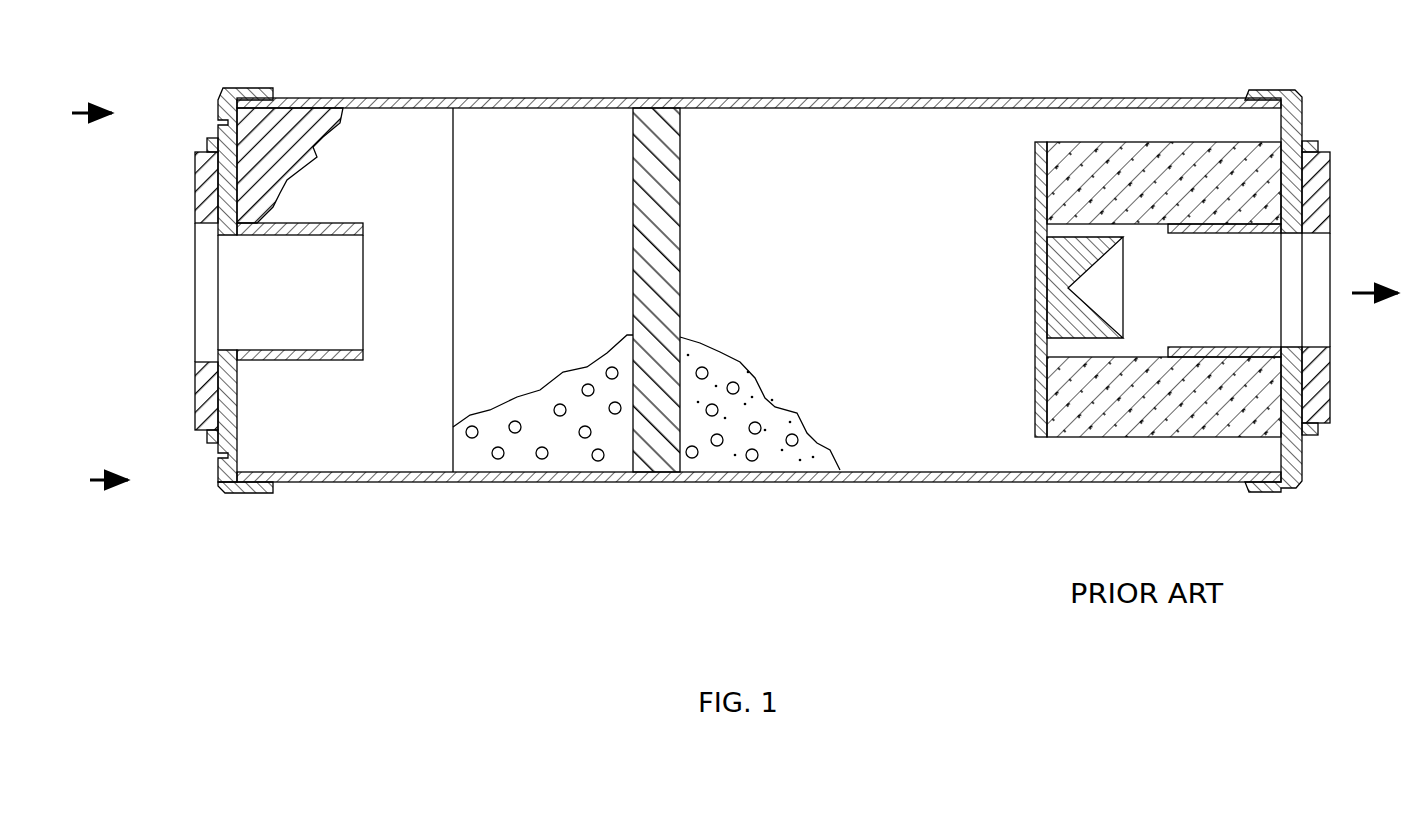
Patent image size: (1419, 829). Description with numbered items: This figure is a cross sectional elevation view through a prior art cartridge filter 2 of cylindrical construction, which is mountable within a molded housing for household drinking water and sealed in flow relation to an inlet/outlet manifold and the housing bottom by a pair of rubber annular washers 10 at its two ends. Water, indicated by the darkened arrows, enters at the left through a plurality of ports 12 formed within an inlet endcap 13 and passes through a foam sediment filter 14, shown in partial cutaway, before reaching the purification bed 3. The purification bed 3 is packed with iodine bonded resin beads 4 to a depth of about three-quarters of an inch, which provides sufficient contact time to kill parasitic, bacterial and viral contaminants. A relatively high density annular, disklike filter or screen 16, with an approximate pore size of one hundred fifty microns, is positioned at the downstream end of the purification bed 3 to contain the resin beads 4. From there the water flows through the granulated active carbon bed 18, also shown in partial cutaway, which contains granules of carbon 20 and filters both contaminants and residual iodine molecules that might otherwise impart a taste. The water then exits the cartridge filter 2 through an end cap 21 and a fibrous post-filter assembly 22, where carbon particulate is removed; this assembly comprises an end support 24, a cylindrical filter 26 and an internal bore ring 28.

The cartridge filter 2 is at (975, 75).
The purification bed 3 is at (530, 330).
The iodine bonded resin beads 4 is at (563, 460).
The rubber annular washers 10 is at (195, 187).
The ports 12 is at (218, 122).
The inlet endcap 13 is at (258, 493).
The foam sediment filter 14 is at (372, 185).
The disklike filter or screen 16 is at (680, 323).
The granulated active carbon bed 18 is at (833, 344).
The granules of carbon 20 is at (707, 457).
The end cap 21 is at (1299, 278).
The fibrous post-filter assembly 22 is at (1031, 439).
The end support 24 is at (1035, 388).
The cylindrical filter 26 is at (1073, 142).
The internal bore ring 28 is at (1235, 233).